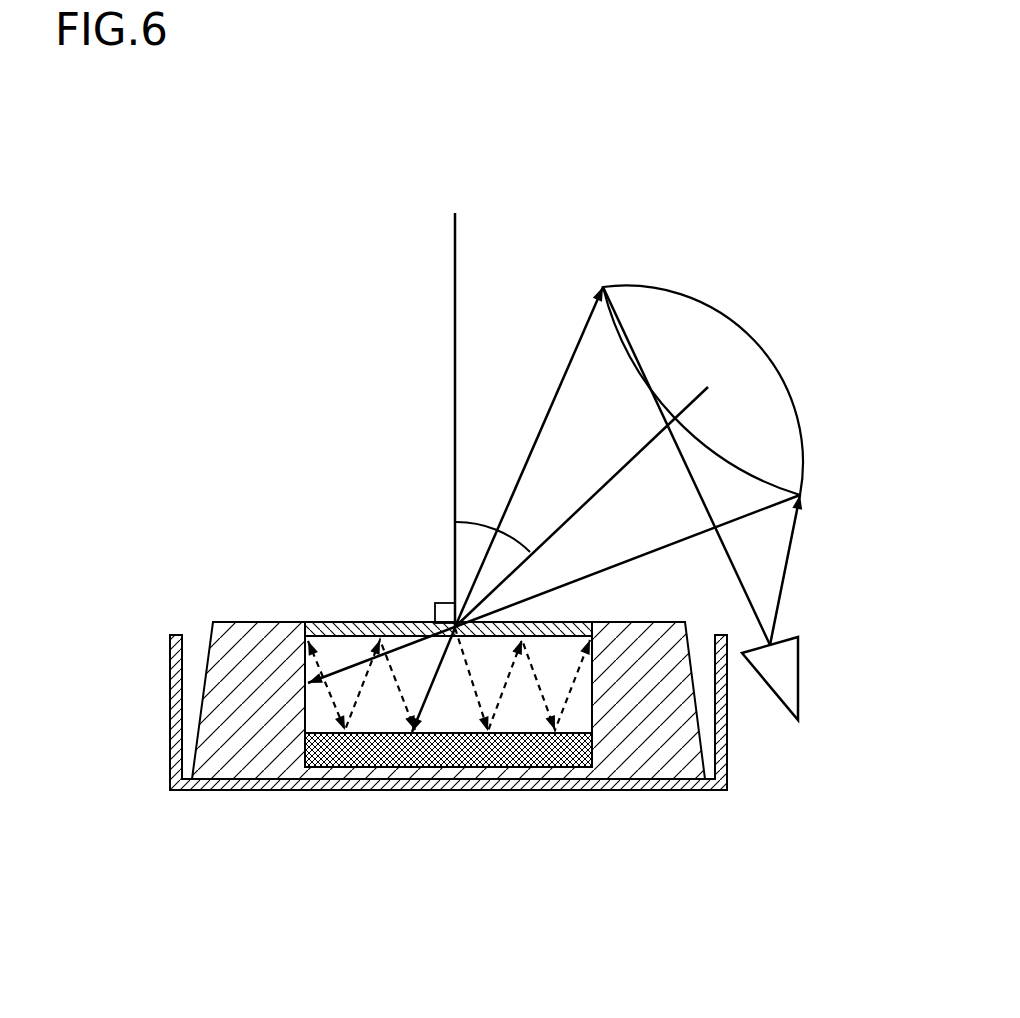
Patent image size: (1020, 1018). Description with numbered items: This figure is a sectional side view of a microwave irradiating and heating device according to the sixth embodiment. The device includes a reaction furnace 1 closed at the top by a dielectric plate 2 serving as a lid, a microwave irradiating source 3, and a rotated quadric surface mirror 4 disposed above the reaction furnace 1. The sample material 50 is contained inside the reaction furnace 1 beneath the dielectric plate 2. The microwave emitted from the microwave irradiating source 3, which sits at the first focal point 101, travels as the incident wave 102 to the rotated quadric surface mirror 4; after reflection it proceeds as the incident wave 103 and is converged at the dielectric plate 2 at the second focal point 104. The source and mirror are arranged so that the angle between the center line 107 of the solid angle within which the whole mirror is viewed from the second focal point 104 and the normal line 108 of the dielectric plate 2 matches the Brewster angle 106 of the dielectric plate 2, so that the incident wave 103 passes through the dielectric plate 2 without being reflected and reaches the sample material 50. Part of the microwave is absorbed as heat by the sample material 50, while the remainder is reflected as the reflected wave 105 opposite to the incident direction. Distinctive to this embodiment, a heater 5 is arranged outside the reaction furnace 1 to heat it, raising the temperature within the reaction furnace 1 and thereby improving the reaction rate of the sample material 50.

The reaction furnace 1 is at (250, 625).
The dielectric plate 2 is at (355, 622).
The microwave irradiating source 3 is at (800, 678).
The rotated quadric surface mirror 4 is at (740, 306).
The heater 5 is at (170, 706).
The sample material 50 is at (435, 758).
The first focal point 101 is at (773, 637).
The incident wave 102 is at (790, 553).
The incident wave 103 is at (568, 362).
The second focal point 104 is at (437, 612).
The reflected wave 105 is at (398, 690).
The Brewster angle 106 is at (480, 525).
The center line 107 is at (617, 470).
The normal line 108 is at (452, 268).